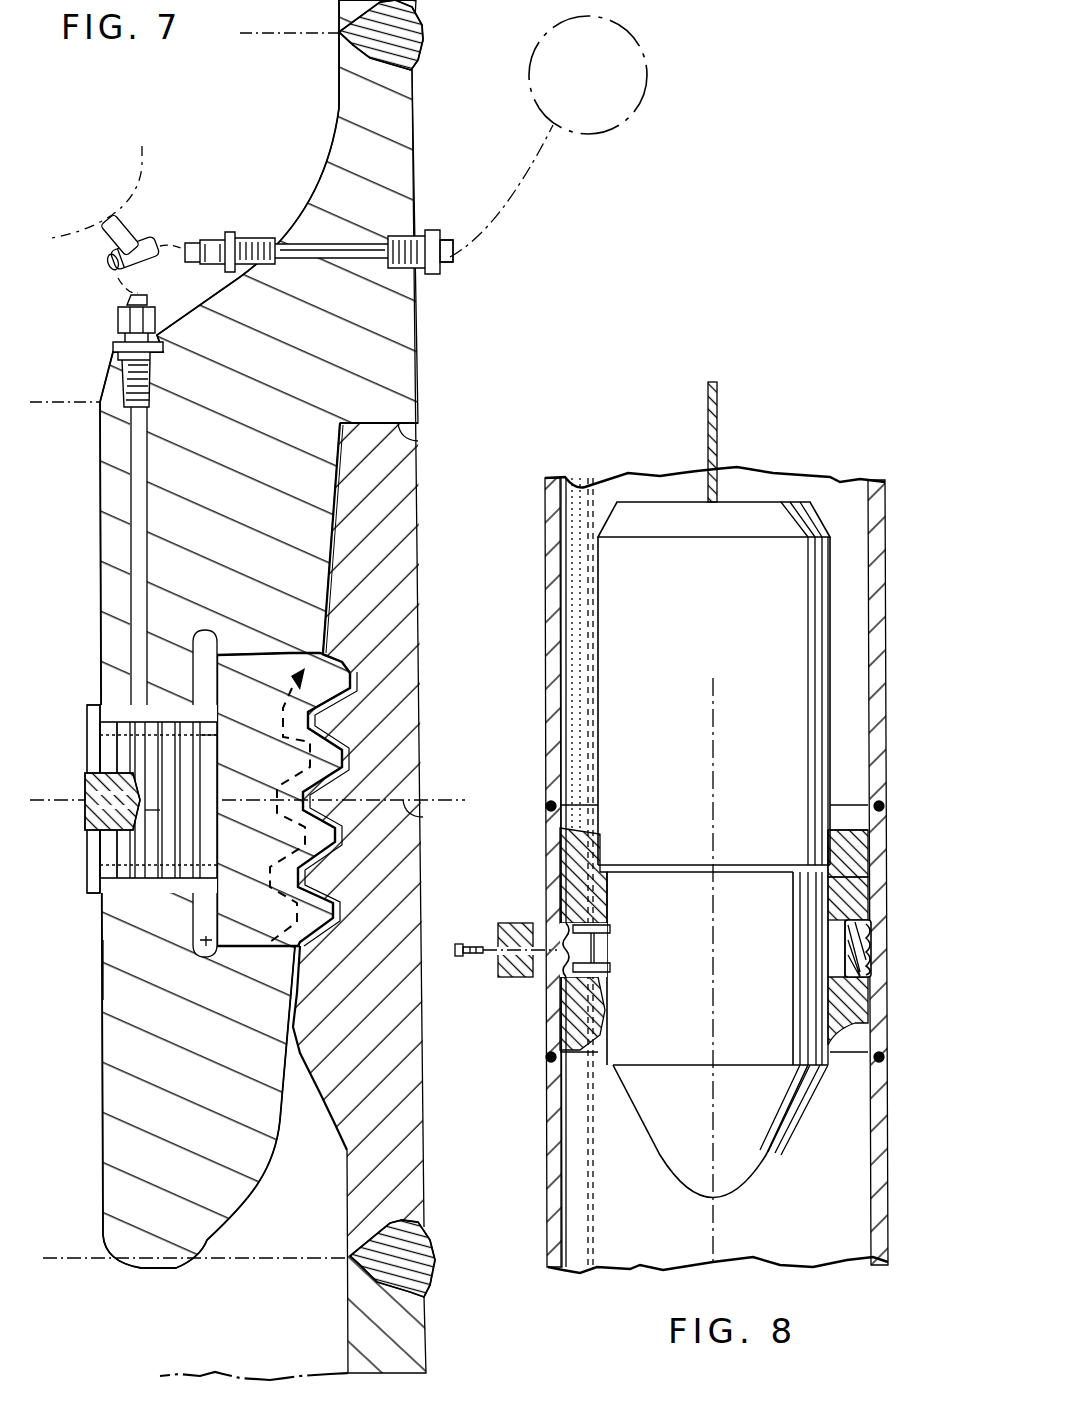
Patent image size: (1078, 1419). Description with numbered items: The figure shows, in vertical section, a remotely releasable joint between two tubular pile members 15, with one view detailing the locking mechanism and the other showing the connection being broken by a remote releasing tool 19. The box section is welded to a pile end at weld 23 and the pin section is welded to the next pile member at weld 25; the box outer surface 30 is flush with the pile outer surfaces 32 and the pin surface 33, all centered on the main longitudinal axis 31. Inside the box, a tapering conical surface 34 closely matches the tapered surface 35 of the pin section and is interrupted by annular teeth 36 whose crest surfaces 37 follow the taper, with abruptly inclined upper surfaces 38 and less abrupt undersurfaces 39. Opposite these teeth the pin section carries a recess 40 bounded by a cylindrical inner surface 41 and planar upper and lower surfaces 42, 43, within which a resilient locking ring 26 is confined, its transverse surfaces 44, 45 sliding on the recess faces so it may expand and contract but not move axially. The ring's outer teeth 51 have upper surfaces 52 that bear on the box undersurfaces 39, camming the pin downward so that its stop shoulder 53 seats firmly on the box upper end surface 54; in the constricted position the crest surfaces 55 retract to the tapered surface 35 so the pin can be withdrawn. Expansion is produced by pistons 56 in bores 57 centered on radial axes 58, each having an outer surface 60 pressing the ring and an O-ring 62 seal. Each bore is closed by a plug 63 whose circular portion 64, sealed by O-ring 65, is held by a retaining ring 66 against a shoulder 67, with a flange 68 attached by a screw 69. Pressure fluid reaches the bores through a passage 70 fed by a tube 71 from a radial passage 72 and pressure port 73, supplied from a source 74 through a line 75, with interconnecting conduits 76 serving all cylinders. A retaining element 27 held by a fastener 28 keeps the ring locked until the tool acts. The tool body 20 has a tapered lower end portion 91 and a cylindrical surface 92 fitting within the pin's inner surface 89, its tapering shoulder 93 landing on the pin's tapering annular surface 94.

In FIG. 8, the pile member 15 is at (893, 500).
In FIG. 8, the remote releasing tool 19 is at (630, 562).
In FIG. 8, the tool body 20 is at (716, 403).
In FIG. 7, the weld 23 is at (428, 1272).
In FIG. 8, the weld 23 is at (547, 1058).
In FIG. 7, the weld 25 is at (418, 38).
In FIG. 8, the weld 25 is at (547, 805).
In FIG. 7, the locking ring 26 is at (355, 668).
In FIG. 8, the locking ring 26 is at (845, 957).
In FIG. 8, the retaining element 27 is at (517, 978).
In FIG. 8, the fastener 28 is at (462, 958).
In FIG. 8, the outer surface 30 is at (873, 932).
In FIG. 8, the main longitudinal axis 31 is at (716, 722).
In FIG. 8, the outer surface 32 is at (885, 640).
In FIG. 8, the surface 33 is at (884, 845).
In FIG. 8, the tapering conical surface 34 is at (858, 890).
In FIG. 8, the tapered surface 35 is at (867, 983).
In FIG. 8, the annular teeth 36 is at (873, 947).
In FIG. 7, the crest surfaces 37 is at (317, 722).
In FIG. 7, the upper surfaces 38 is at (352, 695).
In FIG. 7, the undersurfaces 39 is at (342, 752).
In FIG. 7, the recess 40 is at (217, 617).
In FIG. 7, the radially inner surface 41 is at (143, 893).
In FIG. 7, the upper surface 42 is at (276, 653).
In FIG. 7, the lower surface 43 is at (258, 933).
In FIG. 7, the upper transverse surface 44 is at (310, 653).
In FIG. 7, the lower transverse surface 45 is at (208, 946).
In FIG. 7, the annular teeth 51 is at (350, 842).
In FIG. 7, the upper surfaces 52 is at (342, 880).
In FIG. 7, the stop shoulder 53 is at (404, 436).
In FIG. 7, the upper end surface 54 is at (346, 424).
In FIG. 7, the crest surfaces 55 is at (337, 900).
In FIG. 7, the piston 56 is at (110, 955).
In FIG. 7, the cylindrical bore 57 is at (103, 928).
In FIG. 7, the axis 58 is at (402, 802).
In FIG. 8, the axis 58 is at (583, 764).
In FIG. 7, the outer surface 60 is at (240, 775).
In FIG. 7, the O-ring 62 is at (215, 745).
In FIG. 7, the plug 63 is at (128, 715).
In FIG. 7, the circular portion 64 is at (147, 815).
In FIG. 7, the O-ring 65 is at (115, 717).
In FIG. 7, the retaining ring 66 is at (100, 710).
In FIG. 7, the shoulder 67 is at (90, 836).
In FIG. 7, the flange 68 is at (88, 722).
In FIG. 7, the screw 69 is at (87, 793).
In FIG. 7, the passage 70 is at (132, 442).
In FIG. 7, the tube 71 is at (107, 290).
In FIG. 7, the radially extending passage 72 is at (306, 246).
In FIG. 7, the pressure port 73 is at (454, 267).
In FIG. 7, the pressure source 74 is at (588, 75).
In FIG. 7, the line 75 is at (532, 168).
In FIG. 7, the interconnecting conduits 76 is at (142, 156).
In FIG. 8, the cylindrical inner surface 89 is at (607, 1007).
In FIG. 8, the tapered end portion 91 is at (778, 1140).
In FIG. 8, the outer cylindrical surface 92 is at (830, 1045).
In FIG. 8, the tapering shoulder 93 is at (866, 868).
In FIG. 8, the tapering annular surface 94 is at (867, 832).